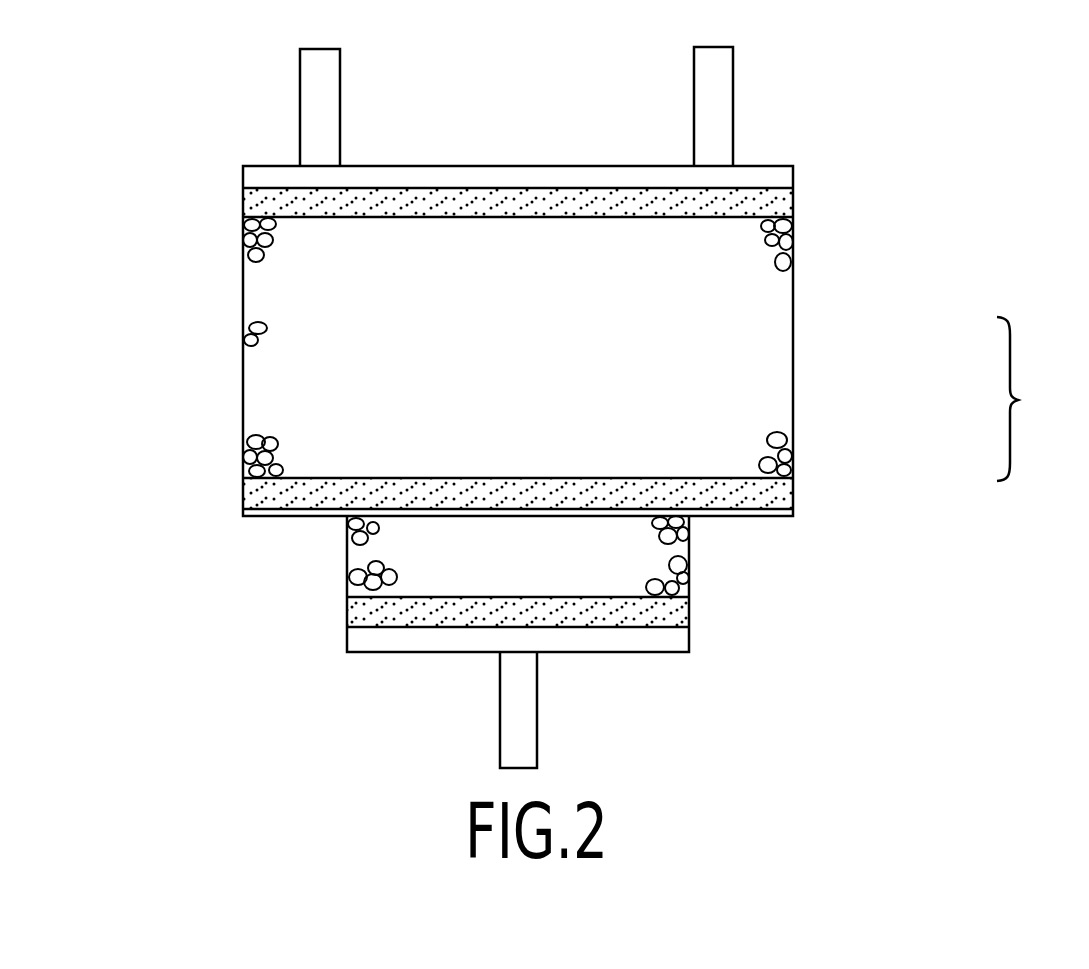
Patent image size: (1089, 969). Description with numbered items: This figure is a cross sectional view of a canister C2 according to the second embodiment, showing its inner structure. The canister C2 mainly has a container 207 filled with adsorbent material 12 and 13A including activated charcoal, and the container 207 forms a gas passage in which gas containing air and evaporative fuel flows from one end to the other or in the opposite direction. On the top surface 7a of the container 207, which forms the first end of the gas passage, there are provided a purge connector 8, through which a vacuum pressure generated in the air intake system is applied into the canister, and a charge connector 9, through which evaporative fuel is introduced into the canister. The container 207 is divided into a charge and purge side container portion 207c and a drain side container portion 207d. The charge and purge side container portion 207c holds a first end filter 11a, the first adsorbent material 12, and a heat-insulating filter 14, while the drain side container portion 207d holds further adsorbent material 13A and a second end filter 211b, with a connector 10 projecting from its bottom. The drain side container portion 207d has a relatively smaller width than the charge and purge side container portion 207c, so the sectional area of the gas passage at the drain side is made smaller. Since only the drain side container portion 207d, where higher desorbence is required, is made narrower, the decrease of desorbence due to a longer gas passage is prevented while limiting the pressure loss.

The top surface 7a is at (483, 166).
The purge connector 8 is at (300, 107).
The charge connector 9 is at (694, 100).
The terminal post 10 is at (500, 712).
The first end filter 11a is at (758, 195).
The first adsorbent material 12 is at (245, 327).
The adsorbent material 13A is at (357, 540).
The heat-insulating filter 14 is at (253, 492).
The container 207 is at (1037, 399).
The charge and purge side container portion 207c is at (793, 323).
The drain side container portion 207d is at (689, 556).
The second end filter 211b is at (652, 612).
The canister C2 is at (165, 368).